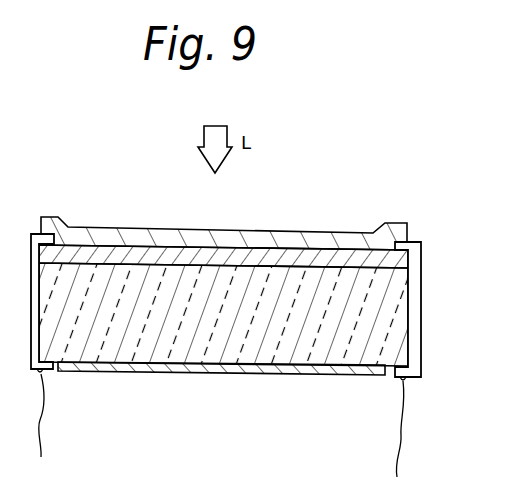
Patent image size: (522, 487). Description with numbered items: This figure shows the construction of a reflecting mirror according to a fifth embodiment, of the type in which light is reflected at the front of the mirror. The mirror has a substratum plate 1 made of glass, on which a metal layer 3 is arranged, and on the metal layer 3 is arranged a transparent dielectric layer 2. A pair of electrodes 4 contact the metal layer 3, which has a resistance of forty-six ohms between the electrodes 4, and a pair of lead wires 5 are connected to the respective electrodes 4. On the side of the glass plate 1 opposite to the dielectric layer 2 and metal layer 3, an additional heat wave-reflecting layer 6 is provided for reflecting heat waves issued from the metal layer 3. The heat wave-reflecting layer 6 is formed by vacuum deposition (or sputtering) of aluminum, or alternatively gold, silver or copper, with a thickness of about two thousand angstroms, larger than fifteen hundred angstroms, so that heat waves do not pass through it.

The substratum plate 1 is at (405, 334).
The transparent dielectric layer 2 is at (405, 229).
The metal layer 3 is at (402, 262).
The electrodes 4 is at (417, 371).
The lead wires 5 is at (398, 442).
The heat wave-reflecting layer 6 is at (313, 378).